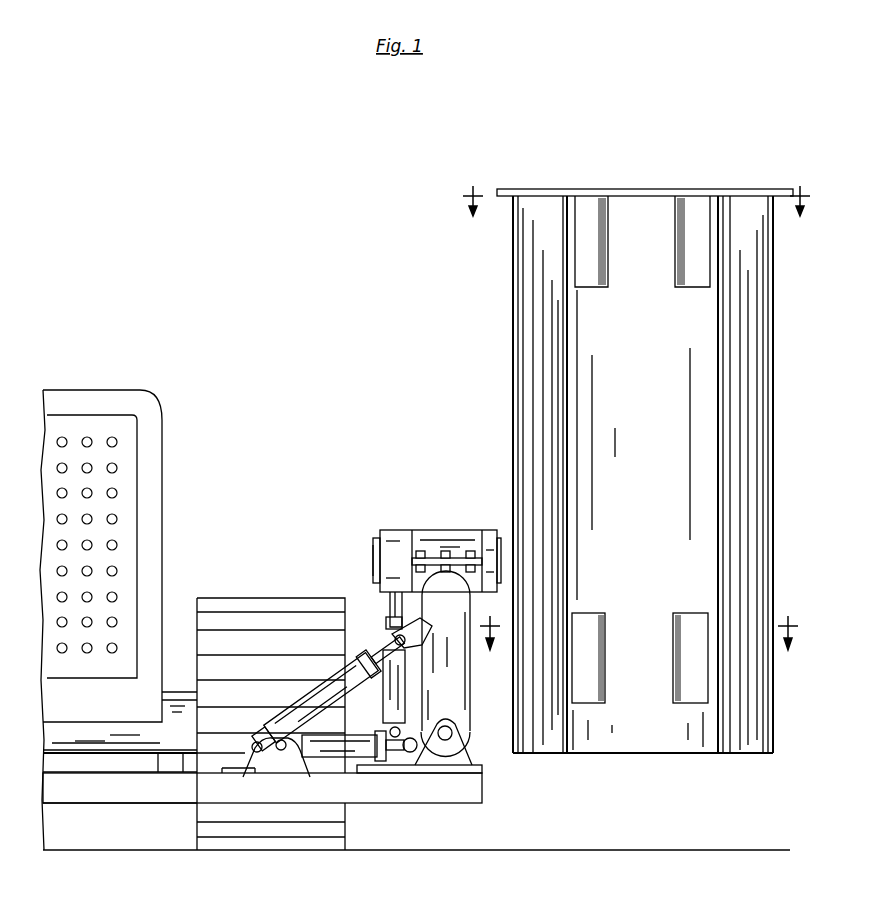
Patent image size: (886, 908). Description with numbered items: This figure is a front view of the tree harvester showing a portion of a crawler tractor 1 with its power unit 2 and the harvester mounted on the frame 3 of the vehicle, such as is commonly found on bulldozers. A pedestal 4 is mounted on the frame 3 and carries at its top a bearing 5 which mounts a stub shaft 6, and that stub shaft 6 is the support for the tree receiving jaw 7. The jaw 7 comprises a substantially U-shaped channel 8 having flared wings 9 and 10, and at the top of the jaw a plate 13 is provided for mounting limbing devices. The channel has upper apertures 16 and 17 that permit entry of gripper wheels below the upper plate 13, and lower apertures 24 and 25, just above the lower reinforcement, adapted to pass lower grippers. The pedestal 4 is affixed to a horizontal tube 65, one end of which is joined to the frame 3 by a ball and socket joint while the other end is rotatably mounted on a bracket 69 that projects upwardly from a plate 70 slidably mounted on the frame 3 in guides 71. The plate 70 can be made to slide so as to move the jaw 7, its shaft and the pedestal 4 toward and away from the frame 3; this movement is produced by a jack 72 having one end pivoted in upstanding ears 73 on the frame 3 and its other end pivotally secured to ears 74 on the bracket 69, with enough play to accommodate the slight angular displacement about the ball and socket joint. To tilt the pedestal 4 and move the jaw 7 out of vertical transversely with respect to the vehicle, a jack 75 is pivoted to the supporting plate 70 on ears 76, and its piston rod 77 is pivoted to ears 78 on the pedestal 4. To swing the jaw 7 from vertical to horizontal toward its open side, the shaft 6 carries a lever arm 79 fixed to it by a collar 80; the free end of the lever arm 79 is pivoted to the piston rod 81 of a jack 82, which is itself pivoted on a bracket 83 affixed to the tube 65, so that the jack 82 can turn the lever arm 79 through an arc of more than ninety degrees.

The crawler tractor 1 is at (212, 531).
The power unit 2 is at (163, 450).
The frame 3 is at (418, 803).
The pedestal 4 is at (470, 690).
The bearing 5 is at (437, 529).
The stub shaft 6 is at (372, 550).
The tree receiving jaw 7 is at (636, 479).
The U-shaped channel 8 is at (716, 313).
The flared wing 9 is at (540, 756).
The flared wing 10 is at (741, 756).
The plate 13 is at (512, 190).
The upper aperture 16 is at (590, 288).
The upper aperture 17 is at (686, 288).
The aperture 24 is at (594, 613).
The aperture 25 is at (682, 613).
The horizontal tube 65 is at (473, 742).
The bracket 69 is at (478, 762).
The plate 70 is at (232, 770).
The guides 71 is at (486, 776).
The jack 72 is at (330, 760).
The upstanding ears 73 is at (276, 757).
The ears 74 is at (410, 765).
The jack 75 is at (330, 690).
The ears 76 is at (251, 747).
The piston rod 77 is at (394, 640).
The ears 78 is at (418, 628).
The lever arm 79 is at (389, 600).
The collar 80 is at (393, 530).
The piston rod 81 is at (382, 703).
The jack 82 is at (386, 626).
The bracket 83 is at (389, 731).